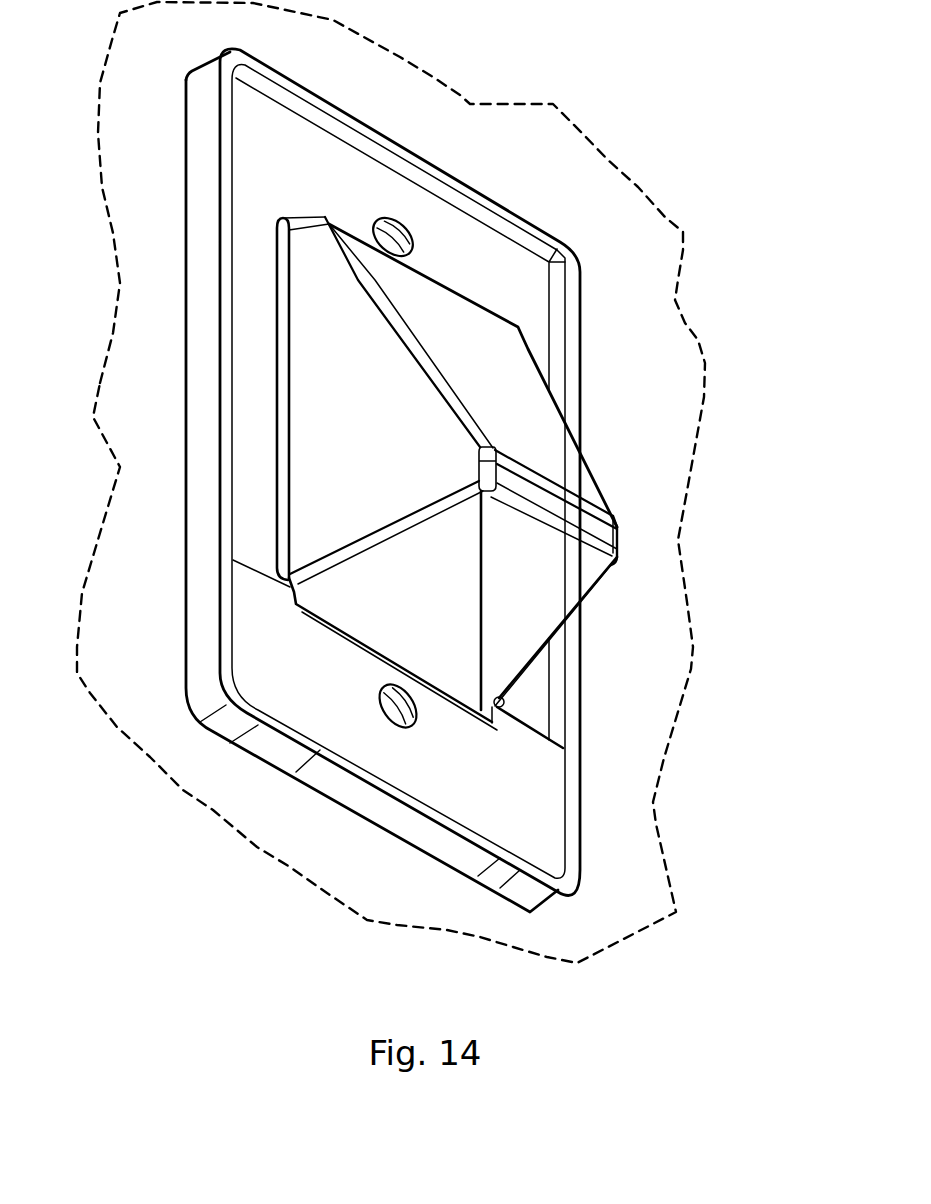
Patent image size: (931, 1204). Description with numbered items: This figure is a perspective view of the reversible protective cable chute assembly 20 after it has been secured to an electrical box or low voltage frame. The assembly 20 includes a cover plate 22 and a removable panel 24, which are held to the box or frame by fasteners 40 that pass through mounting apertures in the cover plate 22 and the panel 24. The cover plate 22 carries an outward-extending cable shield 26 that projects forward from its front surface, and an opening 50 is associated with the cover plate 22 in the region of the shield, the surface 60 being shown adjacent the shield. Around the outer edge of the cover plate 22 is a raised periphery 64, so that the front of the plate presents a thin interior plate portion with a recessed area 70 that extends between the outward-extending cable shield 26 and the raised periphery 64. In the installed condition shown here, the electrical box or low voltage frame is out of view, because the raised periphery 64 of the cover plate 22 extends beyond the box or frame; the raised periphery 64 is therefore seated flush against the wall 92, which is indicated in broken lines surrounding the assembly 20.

The reversible protective cable chute assembly 20 is at (138, 162).
The cover plate 22 is at (528, 213).
The removable panel 24 is at (545, 787).
The outward-extending cable shield 26 is at (518, 390).
The fasteners 40 is at (380, 217).
The opening 50 is at (390, 583).
The right inner hood surface 60 is at (517, 573).
The raised periphery 64 is at (404, 149).
The recessed area 70 is at (458, 275).
The wall 92 is at (126, 84).